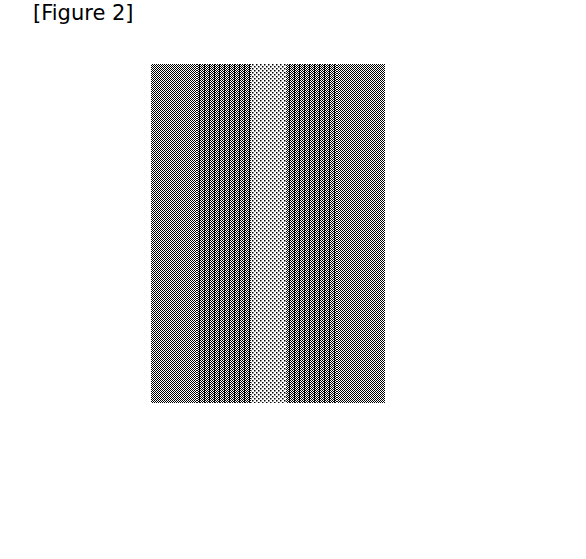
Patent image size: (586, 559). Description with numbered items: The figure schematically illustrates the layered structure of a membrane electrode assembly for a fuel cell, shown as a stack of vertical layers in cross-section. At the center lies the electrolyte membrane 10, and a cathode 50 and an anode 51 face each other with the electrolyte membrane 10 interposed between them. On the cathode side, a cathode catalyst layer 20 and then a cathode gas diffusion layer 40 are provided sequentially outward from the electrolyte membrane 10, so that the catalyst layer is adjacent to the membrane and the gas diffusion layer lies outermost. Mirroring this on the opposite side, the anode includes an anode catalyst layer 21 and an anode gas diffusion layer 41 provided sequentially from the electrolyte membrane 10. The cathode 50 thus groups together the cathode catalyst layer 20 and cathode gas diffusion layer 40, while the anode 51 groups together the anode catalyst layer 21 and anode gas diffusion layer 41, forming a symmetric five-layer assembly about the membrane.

The electrolyte membrane 10 is at (265, 403).
The cathode catalyst layer 20 is at (218, 403).
The anode catalyst layer 21 is at (312, 403).
The cathode gas diffusion layer 40 is at (172, 403).
The anode gas diffusion layer 41 is at (363, 403).
The cathode 50 is at (190, 490).
The anode 51 is at (405, 490).